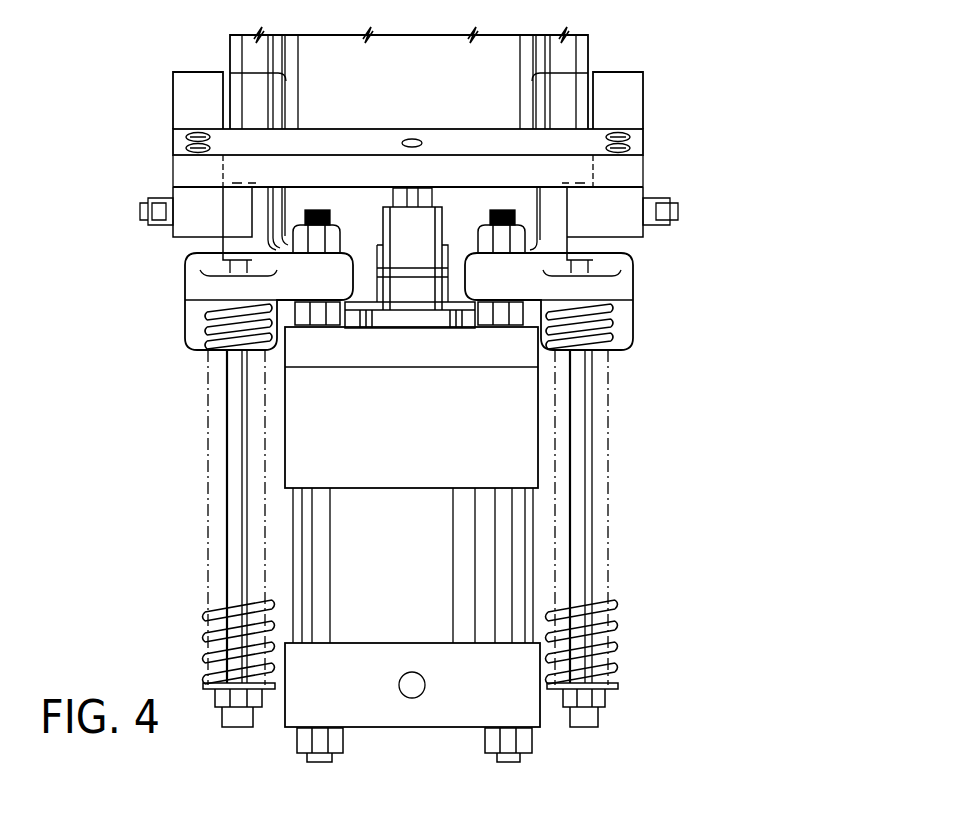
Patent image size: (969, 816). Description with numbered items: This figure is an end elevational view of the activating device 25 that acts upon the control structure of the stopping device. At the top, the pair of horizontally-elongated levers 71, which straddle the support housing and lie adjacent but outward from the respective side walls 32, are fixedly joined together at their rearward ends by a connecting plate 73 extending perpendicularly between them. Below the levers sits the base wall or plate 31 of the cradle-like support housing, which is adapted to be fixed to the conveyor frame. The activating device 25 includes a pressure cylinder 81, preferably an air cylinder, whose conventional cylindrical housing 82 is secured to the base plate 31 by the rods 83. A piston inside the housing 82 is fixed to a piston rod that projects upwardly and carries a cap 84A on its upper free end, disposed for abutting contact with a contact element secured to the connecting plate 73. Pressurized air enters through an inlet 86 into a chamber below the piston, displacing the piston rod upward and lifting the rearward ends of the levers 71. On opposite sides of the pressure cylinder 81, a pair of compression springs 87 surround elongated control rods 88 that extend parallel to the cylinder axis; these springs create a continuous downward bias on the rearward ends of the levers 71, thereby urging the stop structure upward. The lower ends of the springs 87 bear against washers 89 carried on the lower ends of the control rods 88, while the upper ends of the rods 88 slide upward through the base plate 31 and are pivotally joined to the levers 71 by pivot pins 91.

The activating device 25 is at (203, 467).
The base wall or plate 31 is at (195, 285).
The side walls or plates 32 is at (257, 92).
The horizontally-elongated levers 71 is at (200, 107).
The connecting plate 73 is at (453, 145).
The pressure cylinder 81 is at (542, 595).
The cylindrical housing 82 is at (411, 485).
The rods 83 is at (312, 210).
The cap 84A is at (410, 250).
The inlet 86 is at (408, 694).
The compression springs 87 is at (605, 525).
The control rods 88 is at (243, 522).
The washers 89 is at (612, 688).
The pivot pins 91 is at (150, 203).